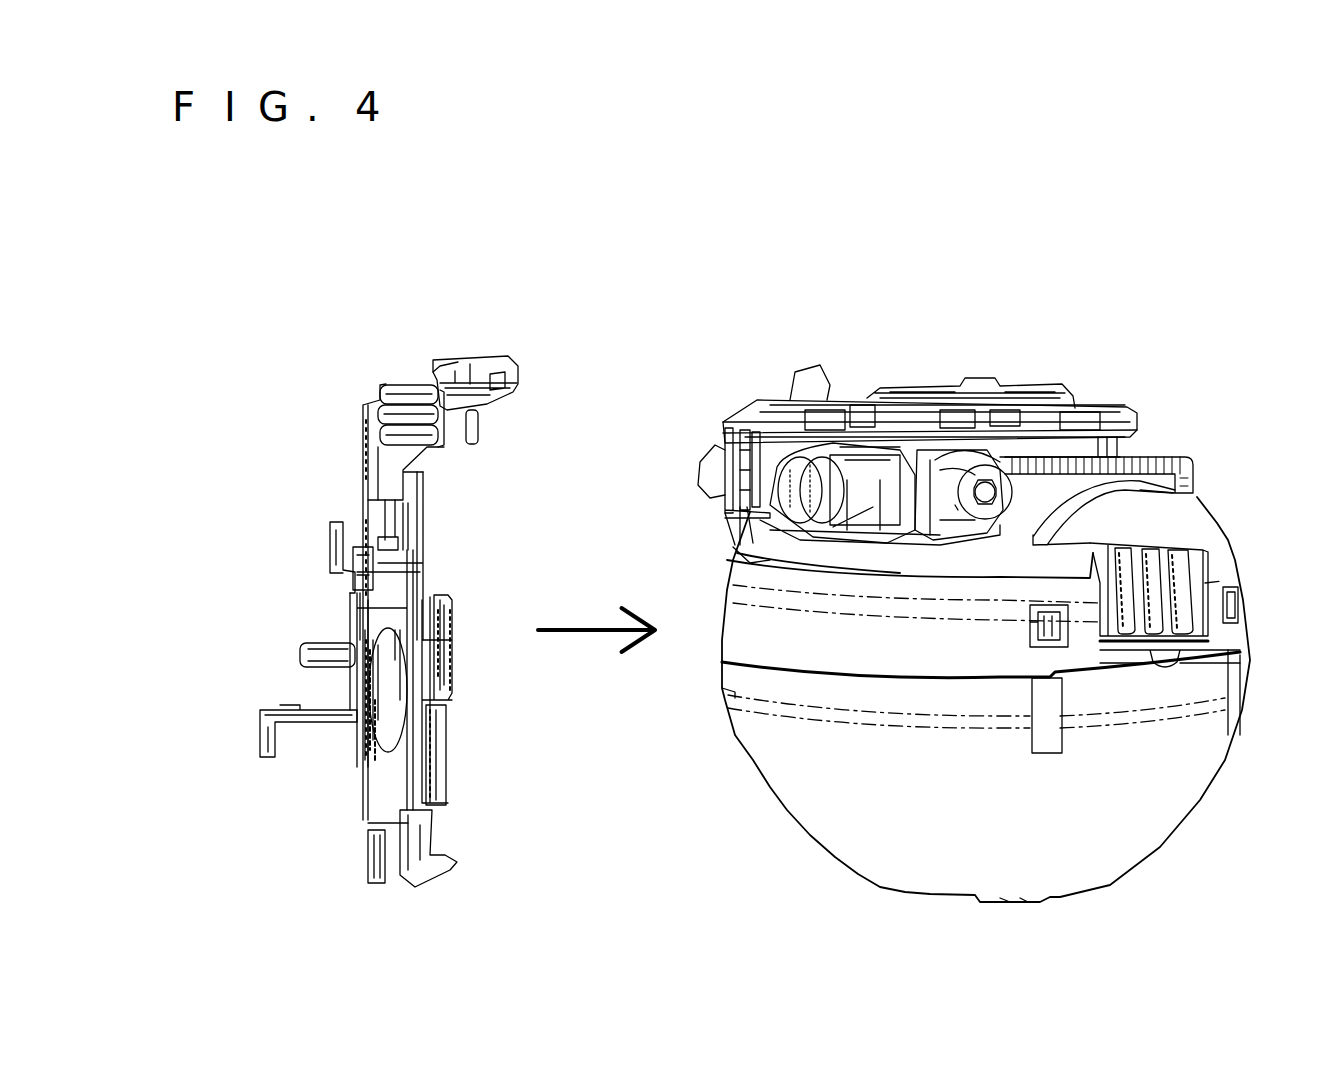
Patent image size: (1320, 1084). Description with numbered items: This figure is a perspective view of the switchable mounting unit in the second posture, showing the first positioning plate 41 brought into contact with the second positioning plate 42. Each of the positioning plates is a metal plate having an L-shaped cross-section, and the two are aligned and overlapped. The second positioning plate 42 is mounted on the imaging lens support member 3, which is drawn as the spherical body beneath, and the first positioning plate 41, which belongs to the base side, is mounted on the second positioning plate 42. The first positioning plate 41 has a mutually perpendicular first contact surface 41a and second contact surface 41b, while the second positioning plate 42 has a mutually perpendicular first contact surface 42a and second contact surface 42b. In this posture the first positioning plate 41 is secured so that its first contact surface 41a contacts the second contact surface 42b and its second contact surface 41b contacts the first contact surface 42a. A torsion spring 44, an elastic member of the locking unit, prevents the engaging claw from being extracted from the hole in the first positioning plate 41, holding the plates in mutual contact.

The imaging lens support member 3 is at (768, 853).
The first positioning plate 41 is at (478, 543).
The first contact surface 41a is at (405, 487).
The second contact surface 41b is at (525, 412).
The second positioning plate 42 is at (1119, 366).
The first contact surface 42a is at (860, 400).
The second contact surface 42b is at (720, 450).
The torsion spring 44 is at (472, 462).